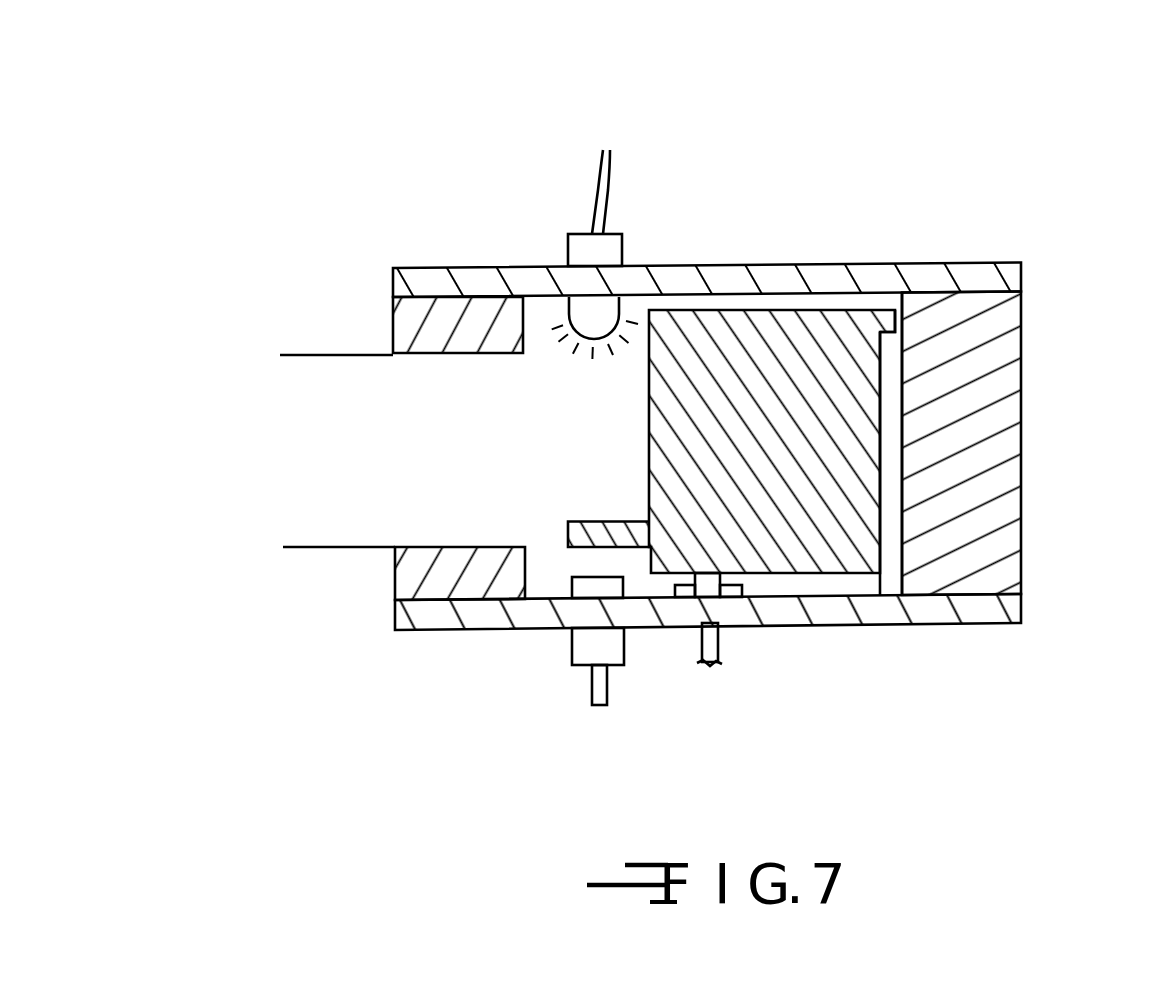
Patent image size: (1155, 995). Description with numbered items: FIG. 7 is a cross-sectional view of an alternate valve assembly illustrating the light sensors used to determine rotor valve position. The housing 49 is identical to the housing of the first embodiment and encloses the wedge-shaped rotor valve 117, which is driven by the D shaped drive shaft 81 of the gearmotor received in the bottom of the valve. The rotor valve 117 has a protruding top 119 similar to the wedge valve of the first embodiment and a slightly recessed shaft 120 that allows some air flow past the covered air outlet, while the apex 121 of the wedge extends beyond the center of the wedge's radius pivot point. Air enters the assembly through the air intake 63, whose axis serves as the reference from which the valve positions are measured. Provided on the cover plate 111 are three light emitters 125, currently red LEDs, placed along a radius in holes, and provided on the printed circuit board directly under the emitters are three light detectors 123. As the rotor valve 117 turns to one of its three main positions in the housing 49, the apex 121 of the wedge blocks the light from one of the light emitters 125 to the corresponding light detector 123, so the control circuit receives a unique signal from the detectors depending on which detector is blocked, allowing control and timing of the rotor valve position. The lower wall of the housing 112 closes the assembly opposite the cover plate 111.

The housing 49 is at (1005, 507).
The air intake 63 is at (352, 491).
The D shaped drive shaft 81 is at (707, 667).
The cover plate 111 is at (750, 263).
The lower housing wall 112 is at (792, 612).
The rotor valve 117 is at (880, 572).
The protruding top 119 is at (888, 317).
The recessed shaft 120 is at (882, 443).
The apex 121 is at (568, 523).
The light detectors 123 is at (626, 657).
The light emitters 125 is at (568, 240).